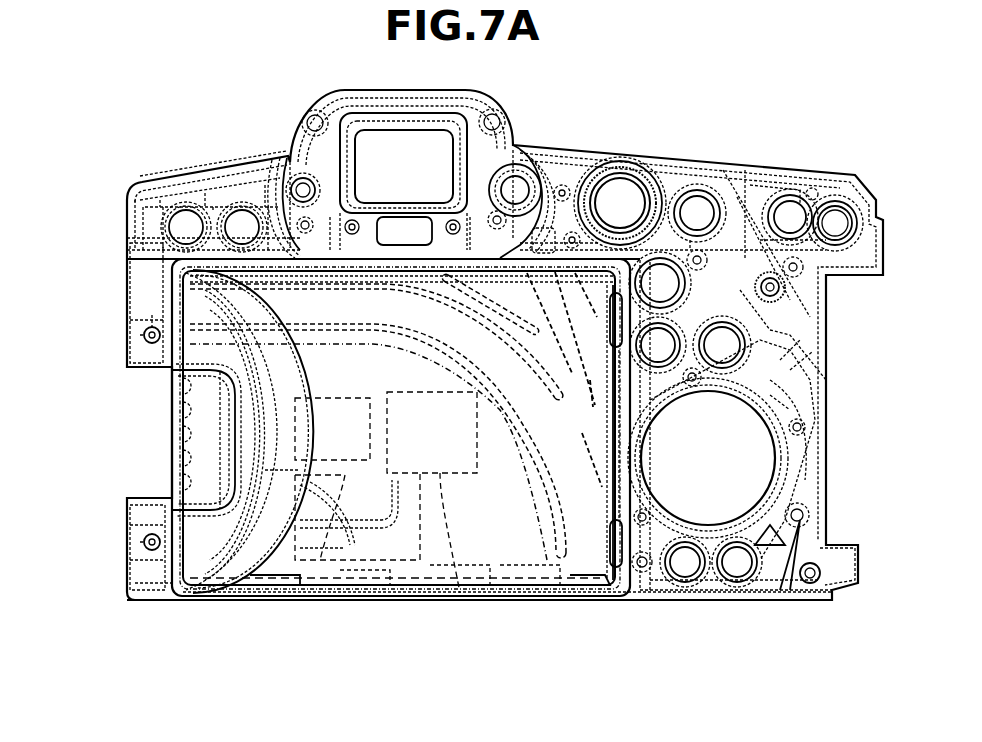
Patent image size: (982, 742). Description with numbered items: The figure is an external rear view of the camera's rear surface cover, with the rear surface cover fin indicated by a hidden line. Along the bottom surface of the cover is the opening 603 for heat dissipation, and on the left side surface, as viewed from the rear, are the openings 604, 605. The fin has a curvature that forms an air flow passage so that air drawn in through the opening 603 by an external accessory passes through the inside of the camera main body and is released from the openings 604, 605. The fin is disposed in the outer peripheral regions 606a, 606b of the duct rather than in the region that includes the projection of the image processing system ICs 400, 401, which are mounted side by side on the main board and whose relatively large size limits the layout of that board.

The image processing system IC 400 is at (455, 572).
The image processing system IC 401 is at (363, 578).
The opening 603 is at (530, 572).
The opening 604 is at (126, 300).
The opening 605 is at (173, 460).
The outer peripheral region 606a is at (297, 580).
The outer peripheral region 606b is at (578, 590).